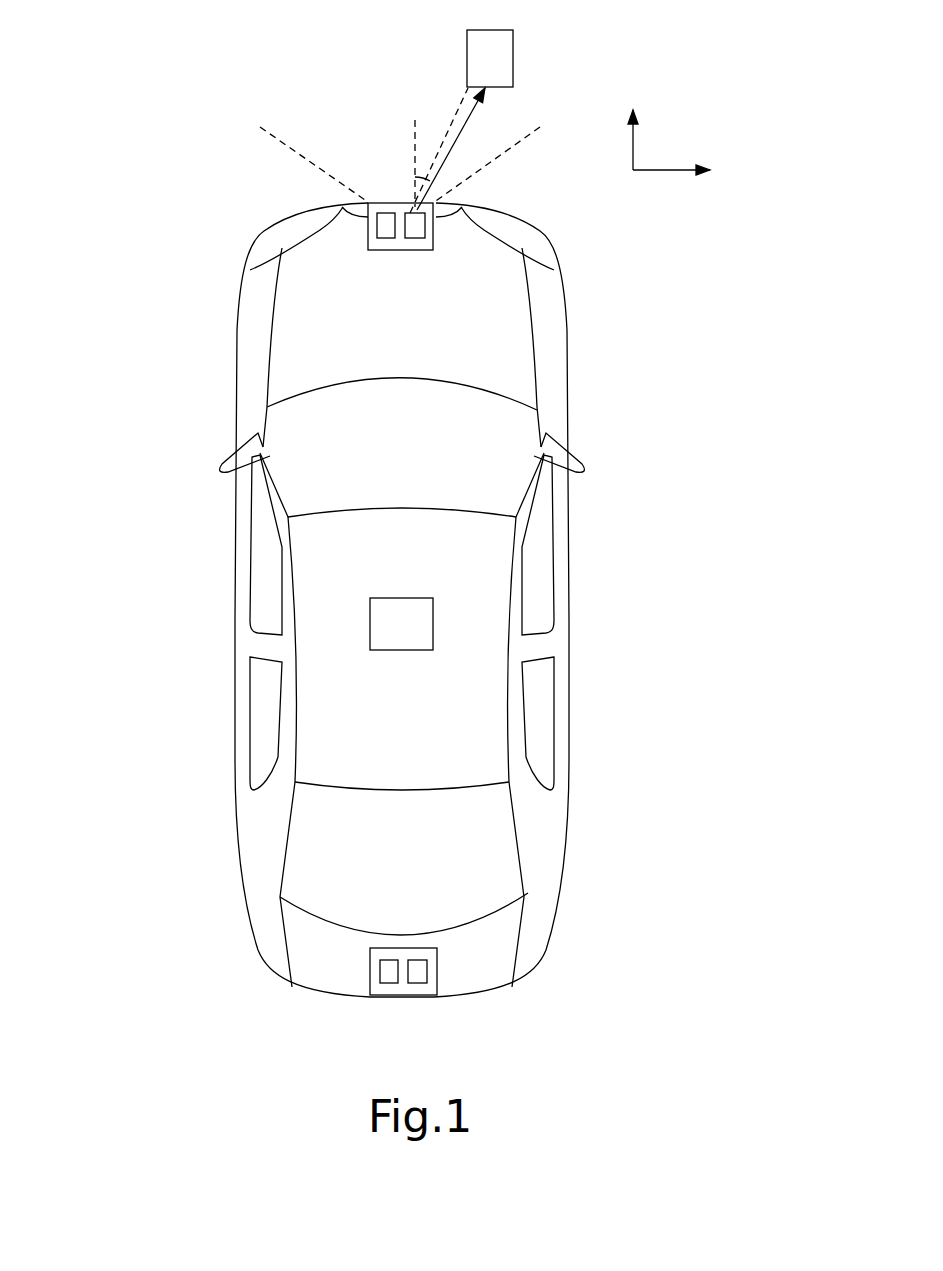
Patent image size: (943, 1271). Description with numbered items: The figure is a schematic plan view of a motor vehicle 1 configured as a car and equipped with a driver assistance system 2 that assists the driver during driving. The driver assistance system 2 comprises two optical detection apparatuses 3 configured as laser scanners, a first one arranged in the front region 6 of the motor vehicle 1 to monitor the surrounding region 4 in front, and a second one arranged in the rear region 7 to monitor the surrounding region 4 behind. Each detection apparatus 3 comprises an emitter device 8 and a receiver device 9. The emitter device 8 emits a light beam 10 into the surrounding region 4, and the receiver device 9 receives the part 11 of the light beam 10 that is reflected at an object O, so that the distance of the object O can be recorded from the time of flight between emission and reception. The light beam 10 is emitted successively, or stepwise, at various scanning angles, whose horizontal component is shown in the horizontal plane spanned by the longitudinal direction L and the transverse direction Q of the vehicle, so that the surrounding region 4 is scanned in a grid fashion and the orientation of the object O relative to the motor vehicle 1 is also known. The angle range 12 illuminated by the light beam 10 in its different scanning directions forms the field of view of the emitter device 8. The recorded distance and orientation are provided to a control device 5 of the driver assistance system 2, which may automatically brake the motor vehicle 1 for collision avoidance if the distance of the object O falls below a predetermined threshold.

The motor vehicle 1 is at (233, 328).
The driver assistance system 2 is at (478, 573).
The optical detection apparatus 3 is at (402, 250).
The surrounding region 4 is at (107, 360).
The control device 5 is at (398, 652).
The front region 6 is at (313, 197).
The rear region 7 is at (322, 1008).
The emitter device 8 is at (425, 235).
The receiver device 9 is at (377, 235).
The light beam 10 is at (463, 132).
The reflected part of the light beam 11 is at (457, 113).
The angle range 12 is at (352, 132).
The object O is at (513, 57).
The longitudinal direction of the vehicle L is at (633, 124).
The transverse direction of the vehicle Q is at (683, 169).